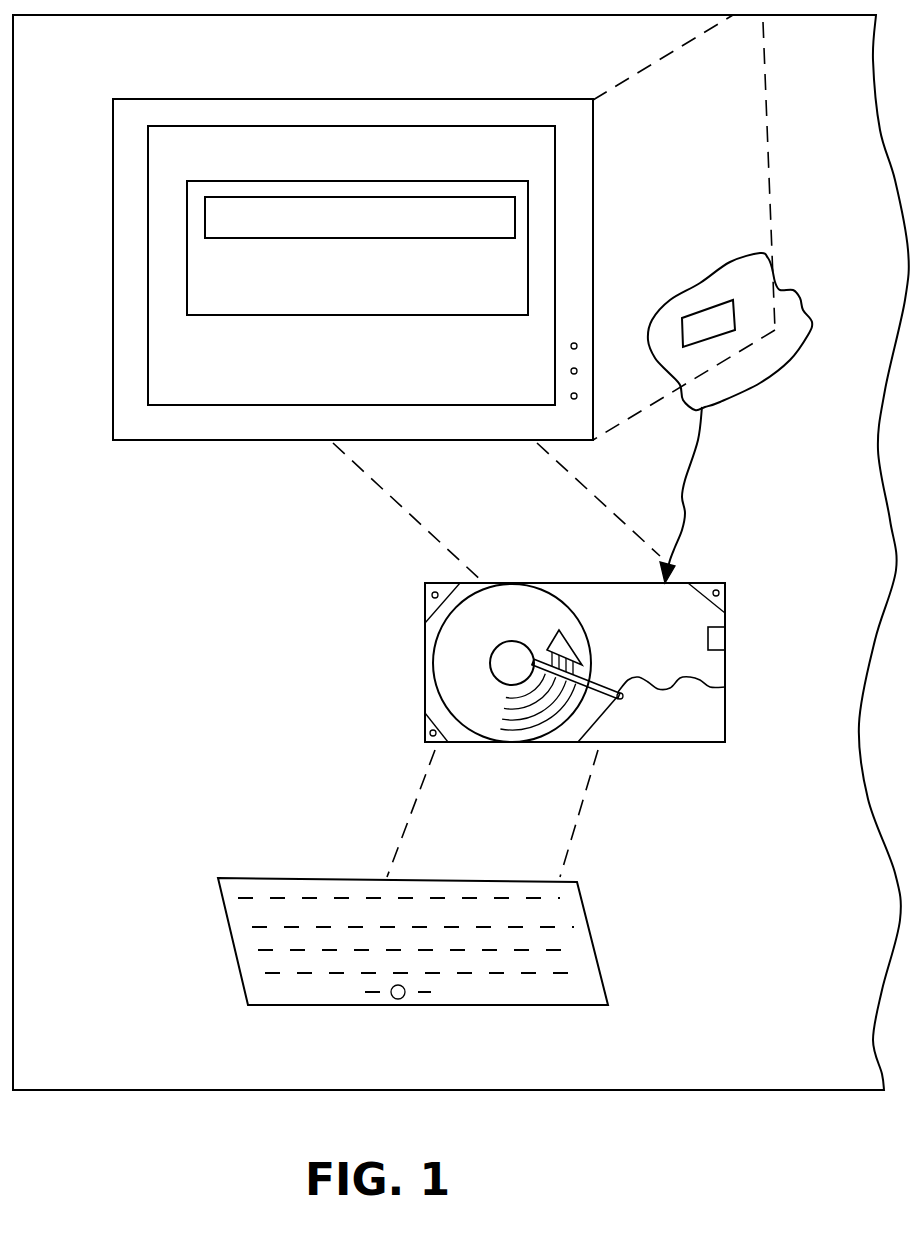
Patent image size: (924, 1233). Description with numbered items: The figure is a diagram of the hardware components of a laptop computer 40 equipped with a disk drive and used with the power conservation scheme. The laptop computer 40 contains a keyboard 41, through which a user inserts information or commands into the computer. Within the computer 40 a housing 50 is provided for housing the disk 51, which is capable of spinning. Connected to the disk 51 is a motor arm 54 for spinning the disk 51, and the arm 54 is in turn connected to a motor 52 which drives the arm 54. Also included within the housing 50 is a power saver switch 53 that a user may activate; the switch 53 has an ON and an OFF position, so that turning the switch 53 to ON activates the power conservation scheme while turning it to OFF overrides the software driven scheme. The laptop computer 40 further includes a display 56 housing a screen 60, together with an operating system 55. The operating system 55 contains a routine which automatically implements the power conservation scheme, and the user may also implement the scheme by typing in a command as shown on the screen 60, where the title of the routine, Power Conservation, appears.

The laptop computer 40 is at (70, 1090).
The keyboard 41 is at (597, 958).
The housing 50 is at (425, 628).
The disk 51 is at (458, 692).
The motor 52 is at (651, 743).
The power saver switch 53 is at (723, 638).
The motor arm 54 is at (615, 688).
The operating system 55 is at (723, 297).
The display 56 is at (113, 235).
The screen 60 is at (420, 196).